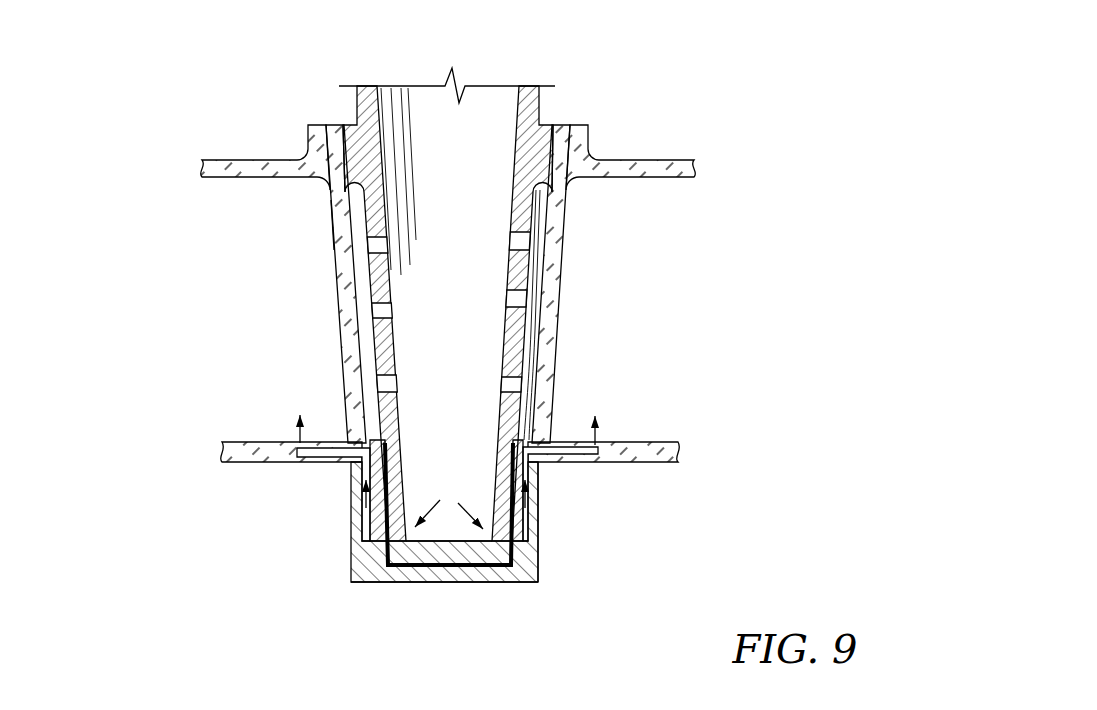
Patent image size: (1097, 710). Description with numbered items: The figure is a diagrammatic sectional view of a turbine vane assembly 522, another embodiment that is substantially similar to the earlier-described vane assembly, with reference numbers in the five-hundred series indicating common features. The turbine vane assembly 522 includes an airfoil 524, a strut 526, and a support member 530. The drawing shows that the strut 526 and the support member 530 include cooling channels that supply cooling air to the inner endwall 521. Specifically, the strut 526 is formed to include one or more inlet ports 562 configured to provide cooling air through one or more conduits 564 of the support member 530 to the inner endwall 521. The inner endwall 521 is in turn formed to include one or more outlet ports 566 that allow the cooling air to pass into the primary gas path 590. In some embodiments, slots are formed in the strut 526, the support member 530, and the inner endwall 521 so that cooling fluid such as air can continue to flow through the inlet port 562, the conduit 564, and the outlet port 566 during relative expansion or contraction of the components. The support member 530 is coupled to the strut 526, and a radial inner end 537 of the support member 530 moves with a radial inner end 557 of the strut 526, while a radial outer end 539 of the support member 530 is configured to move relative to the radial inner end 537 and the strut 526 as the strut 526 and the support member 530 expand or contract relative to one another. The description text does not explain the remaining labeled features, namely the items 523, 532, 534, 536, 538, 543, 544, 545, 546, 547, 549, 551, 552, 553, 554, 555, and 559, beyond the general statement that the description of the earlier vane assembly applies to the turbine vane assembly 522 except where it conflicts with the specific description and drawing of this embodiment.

The inner endwall 521 is at (232, 472).
The turbine vane assembly 522 is at (174, 149).
The upper left flange 523 is at (255, 157).
The airfoil 524 is at (314, 263).
The strut 526 is at (425, 134).
The support member 530 is at (349, 549).
The base outer wall 532 is at (546, 578).
The cavity floor 534 is at (410, 528).
The coolant gap 536 is at (545, 402).
The radial inner end of the support member 537 is at (365, 591).
The conduit bottom 538 is at (469, 570).
The radial outer end of the support member 539 is at (356, 467).
The inner wall 543 is at (542, 329).
The right outer sleeve 544 is at (556, 252).
The seal interface 545 is at (562, 147).
The sleeve outer surface 546 is at (331, 221).
The outlet passage 547 is at (546, 415).
The upper right flange 549 is at (572, 182).
The heating element 551 is at (371, 351).
The seal joint 552 is at (343, 150).
The support band 553 is at (402, 452).
The heating elements 554 is at (385, 322).
The interior chamber 555 is at (452, 219).
The radial inner end of the strut 557 is at (468, 588).
The top edge 559 is at (542, 87).
The inlet port 562 is at (539, 346).
The conduit 564 is at (525, 510).
The outlet port 566 is at (568, 463).
The primary gas path 590 is at (601, 321).